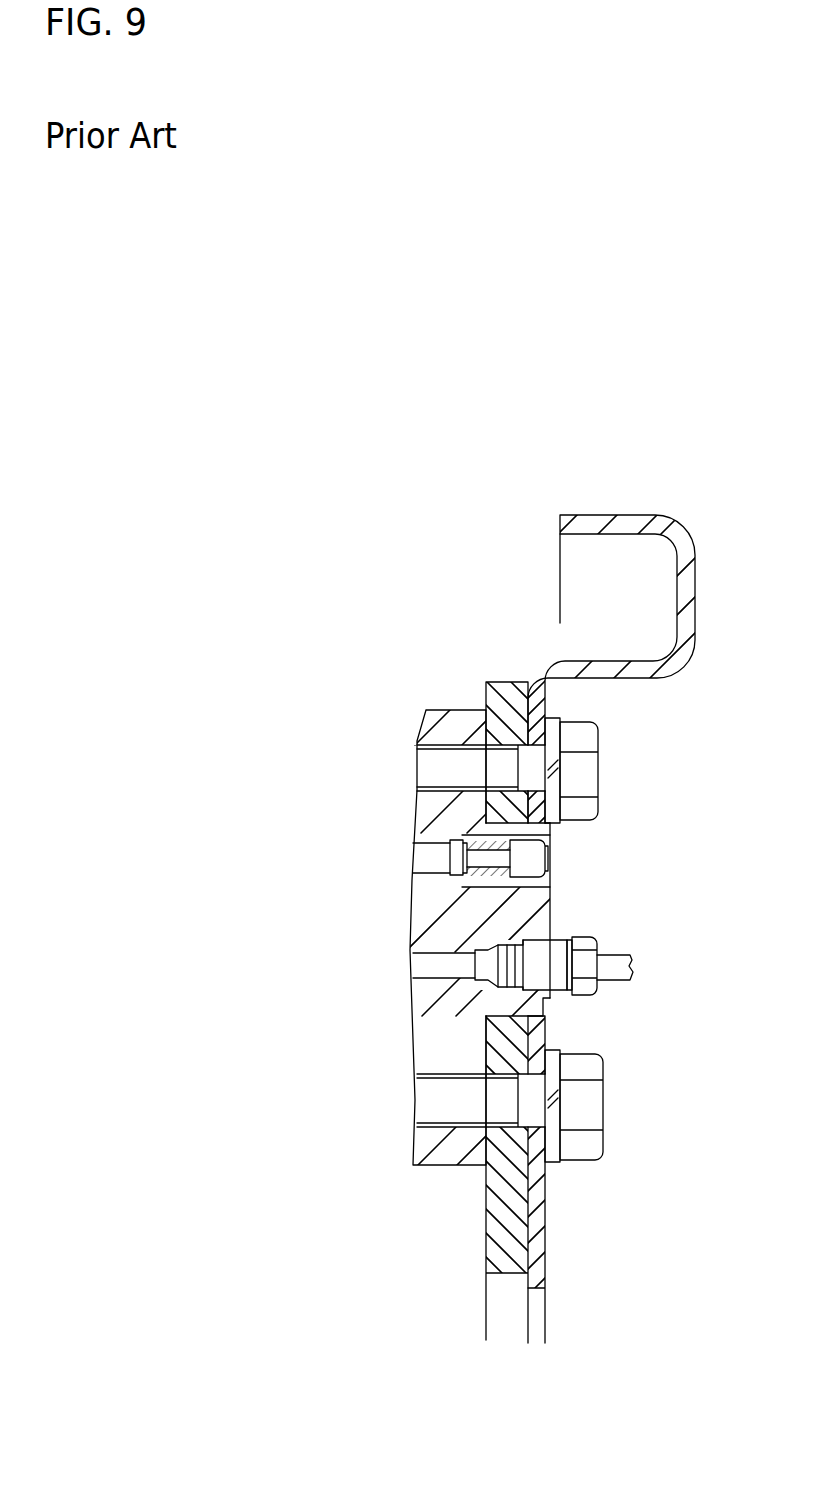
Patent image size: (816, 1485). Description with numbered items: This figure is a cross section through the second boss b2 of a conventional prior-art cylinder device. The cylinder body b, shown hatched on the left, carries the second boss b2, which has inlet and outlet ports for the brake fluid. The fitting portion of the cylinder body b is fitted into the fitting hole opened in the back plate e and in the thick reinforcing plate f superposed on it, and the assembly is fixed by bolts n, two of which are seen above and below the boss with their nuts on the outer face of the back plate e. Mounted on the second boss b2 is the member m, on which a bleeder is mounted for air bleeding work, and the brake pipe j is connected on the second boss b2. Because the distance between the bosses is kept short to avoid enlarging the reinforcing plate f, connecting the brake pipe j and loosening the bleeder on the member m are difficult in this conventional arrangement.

The cylinder body b is at (427, 904).
The second boss b2 is at (549, 903).
The bolts n is at (586, 767).
The member of the second boss m is at (536, 860).
The brake pipe j is at (606, 987).
The back plate e is at (540, 1213).
The reinforcing plate f is at (498, 1232).